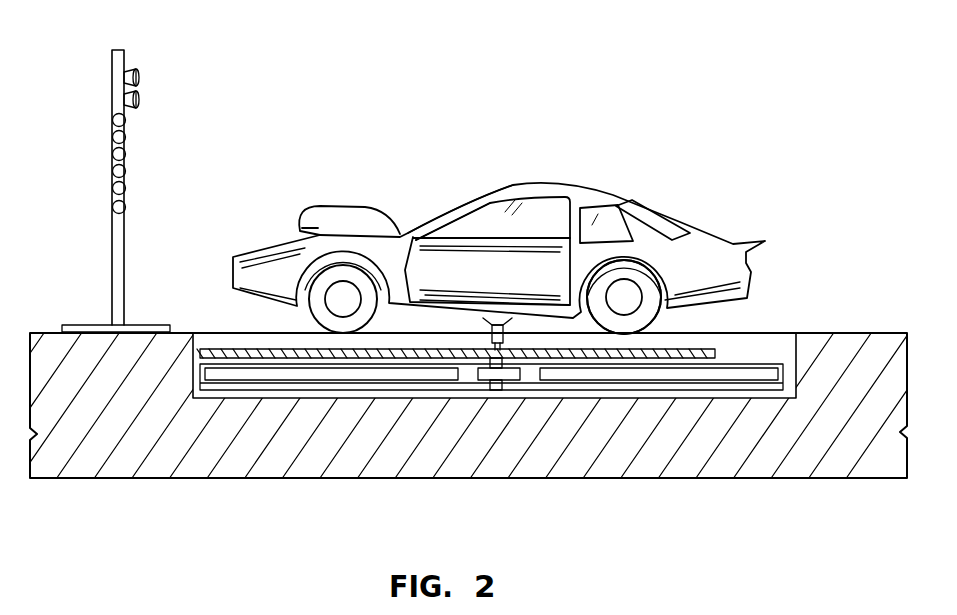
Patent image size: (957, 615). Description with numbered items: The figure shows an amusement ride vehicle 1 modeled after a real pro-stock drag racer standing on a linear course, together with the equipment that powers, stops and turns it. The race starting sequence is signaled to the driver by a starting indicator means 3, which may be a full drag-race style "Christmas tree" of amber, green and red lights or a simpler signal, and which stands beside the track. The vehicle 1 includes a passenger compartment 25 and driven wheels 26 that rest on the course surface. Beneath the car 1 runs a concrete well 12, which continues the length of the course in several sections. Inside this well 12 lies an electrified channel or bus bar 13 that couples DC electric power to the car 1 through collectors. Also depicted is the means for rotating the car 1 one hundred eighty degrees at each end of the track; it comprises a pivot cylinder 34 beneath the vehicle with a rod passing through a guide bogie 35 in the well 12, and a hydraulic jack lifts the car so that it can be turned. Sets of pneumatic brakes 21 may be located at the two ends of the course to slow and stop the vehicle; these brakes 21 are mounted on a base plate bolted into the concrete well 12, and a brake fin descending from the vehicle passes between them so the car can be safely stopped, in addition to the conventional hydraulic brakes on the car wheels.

The amusement ride vehicle 1 is at (600, 194).
The starting indicator means 3 is at (123, 60).
The concrete well 12 is at (193, 455).
The bus bar 13 is at (222, 356).
The pneumatic brakes 21 is at (312, 367).
The passenger compartment 25 is at (484, 218).
The driven wheels 26 is at (655, 327).
The pivot cylinder 34 is at (490, 333).
The guide bogie 35 is at (502, 363).